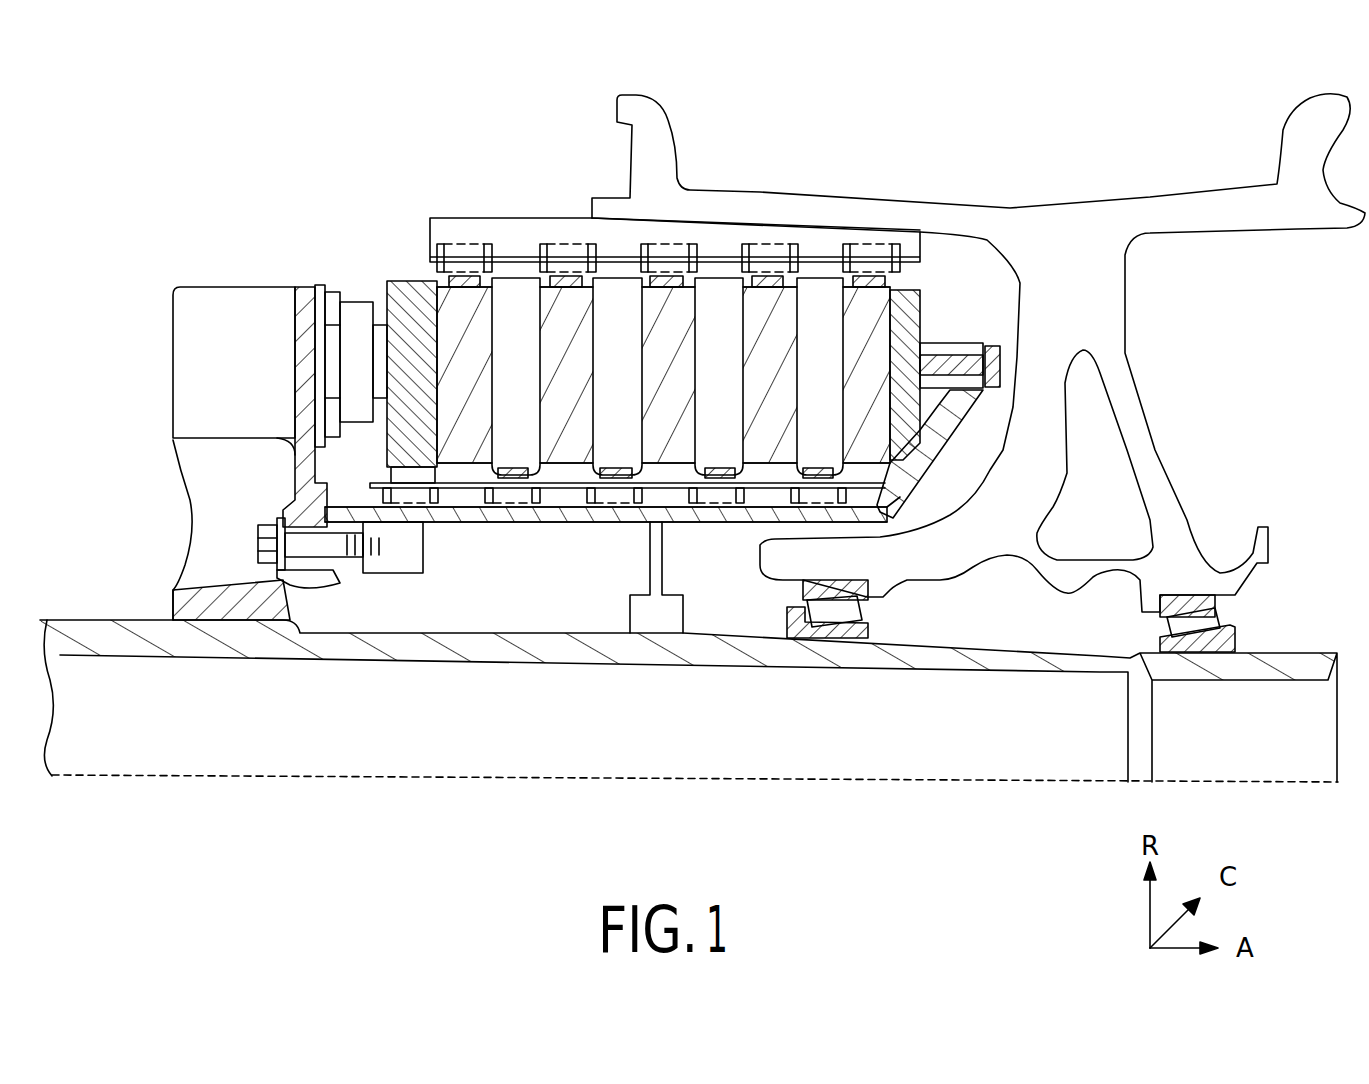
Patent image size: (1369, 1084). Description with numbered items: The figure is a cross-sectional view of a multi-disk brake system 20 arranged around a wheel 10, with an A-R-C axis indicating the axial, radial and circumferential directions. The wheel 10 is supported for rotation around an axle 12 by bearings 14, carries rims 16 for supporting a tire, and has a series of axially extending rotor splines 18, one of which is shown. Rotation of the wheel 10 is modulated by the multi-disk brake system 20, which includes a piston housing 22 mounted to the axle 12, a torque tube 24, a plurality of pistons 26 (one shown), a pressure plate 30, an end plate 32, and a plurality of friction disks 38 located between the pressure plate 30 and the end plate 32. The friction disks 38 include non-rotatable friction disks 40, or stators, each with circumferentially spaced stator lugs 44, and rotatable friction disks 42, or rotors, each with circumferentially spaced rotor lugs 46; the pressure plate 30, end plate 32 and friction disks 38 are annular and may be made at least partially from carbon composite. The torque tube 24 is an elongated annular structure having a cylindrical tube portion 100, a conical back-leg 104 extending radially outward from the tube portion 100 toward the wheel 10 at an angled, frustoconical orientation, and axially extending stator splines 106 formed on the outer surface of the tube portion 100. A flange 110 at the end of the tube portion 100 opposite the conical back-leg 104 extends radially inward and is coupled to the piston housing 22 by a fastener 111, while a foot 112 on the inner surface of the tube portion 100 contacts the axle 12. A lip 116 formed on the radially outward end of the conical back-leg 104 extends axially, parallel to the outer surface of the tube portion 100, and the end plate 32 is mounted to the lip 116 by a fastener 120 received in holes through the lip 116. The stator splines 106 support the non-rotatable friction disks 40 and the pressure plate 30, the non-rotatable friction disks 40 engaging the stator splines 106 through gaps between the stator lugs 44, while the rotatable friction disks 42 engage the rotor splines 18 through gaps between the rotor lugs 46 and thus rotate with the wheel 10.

The wheel 10 is at (1050, 305).
The axle 12 is at (1040, 658).
The bearings 14 is at (845, 614).
The rims 16 is at (662, 115).
The rotor splines 18 is at (570, 220).
The multi-disk brake system 20 is at (326, 230).
The piston housing 22 is at (290, 506).
The torque tube 24 is at (478, 522).
The pistons 26 is at (357, 317).
The pressure plate 30 is at (403, 290).
The end plate 32 is at (955, 237).
The friction disks 38 is at (420, 262).
The non-rotatable friction disk 40 is at (822, 300).
The rotatable friction disk 42 is at (462, 302).
The stator lugs 44 is at (800, 500).
The rotor lugs 46 is at (540, 245).
The tube portion 100 is at (622, 505).
The conical back-leg 104 is at (930, 445).
The stator splines 106 is at (363, 505).
The flange 110 is at (410, 560).
The fastener 111 is at (312, 540).
The foot 112 is at (660, 615).
The lip 116 is at (930, 347).
The fastener 120 is at (993, 346).